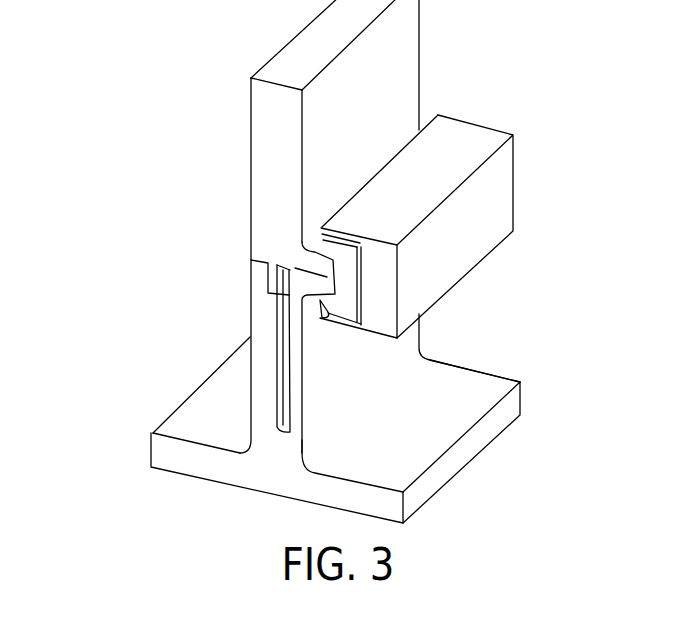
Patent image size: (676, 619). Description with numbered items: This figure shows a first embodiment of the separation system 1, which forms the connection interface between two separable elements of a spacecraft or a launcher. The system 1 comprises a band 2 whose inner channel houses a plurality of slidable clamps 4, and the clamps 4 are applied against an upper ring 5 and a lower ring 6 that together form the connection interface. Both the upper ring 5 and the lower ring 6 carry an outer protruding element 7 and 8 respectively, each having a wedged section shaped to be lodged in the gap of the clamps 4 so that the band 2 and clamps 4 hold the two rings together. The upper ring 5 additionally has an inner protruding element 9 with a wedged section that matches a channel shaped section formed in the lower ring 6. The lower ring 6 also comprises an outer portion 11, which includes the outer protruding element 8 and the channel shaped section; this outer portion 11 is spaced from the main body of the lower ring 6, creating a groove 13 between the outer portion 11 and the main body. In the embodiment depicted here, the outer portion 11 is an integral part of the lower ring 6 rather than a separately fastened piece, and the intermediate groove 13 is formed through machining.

The system 1 is at (205, 233).
The band 2 is at (480, 138).
The slidable clamps 4 is at (345, 252).
The upper ring 5 is at (267, 140).
The lower ring 6 is at (260, 405).
The outer protruding element 7 is at (336, 266).
The outer protruding element 8 is at (336, 293).
The inner protruding element 9 is at (251, 283).
The outer portion 11 is at (297, 373).
The groove 13 is at (273, 362).